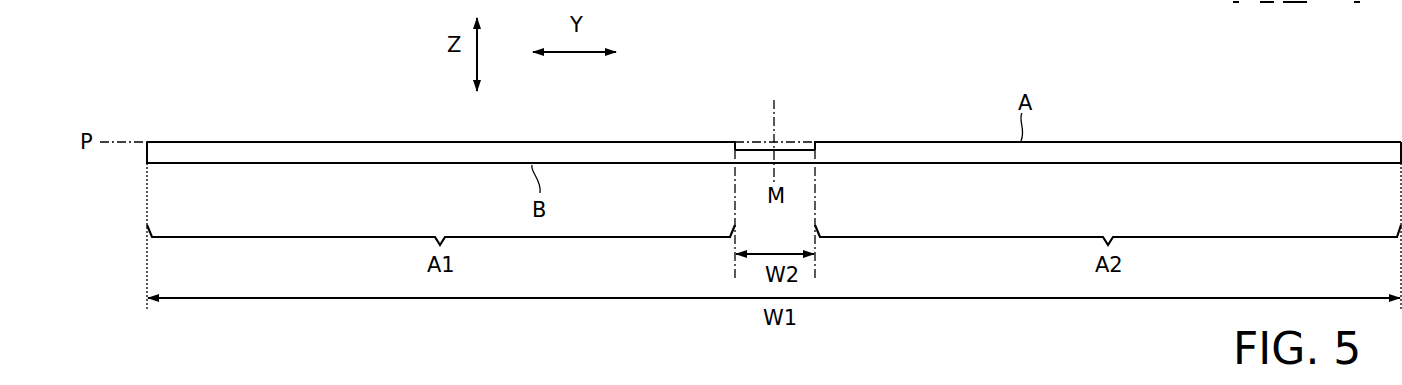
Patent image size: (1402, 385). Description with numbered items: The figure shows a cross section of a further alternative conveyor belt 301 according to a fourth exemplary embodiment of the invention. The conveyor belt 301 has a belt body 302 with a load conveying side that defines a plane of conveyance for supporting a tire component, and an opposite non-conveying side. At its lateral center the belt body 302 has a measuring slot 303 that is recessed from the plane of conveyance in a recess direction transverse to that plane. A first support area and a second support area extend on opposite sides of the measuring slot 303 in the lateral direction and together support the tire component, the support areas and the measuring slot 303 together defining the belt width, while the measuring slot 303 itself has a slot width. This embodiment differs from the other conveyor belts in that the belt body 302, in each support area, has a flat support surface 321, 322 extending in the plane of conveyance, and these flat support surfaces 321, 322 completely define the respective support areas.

The conveyor belt 301 is at (242, 80).
The belt body 302 is at (287, 165).
The measuring slot 303 is at (752, 148).
The flat support surface 321 is at (338, 141).
The flat support surface 322 is at (1150, 141).